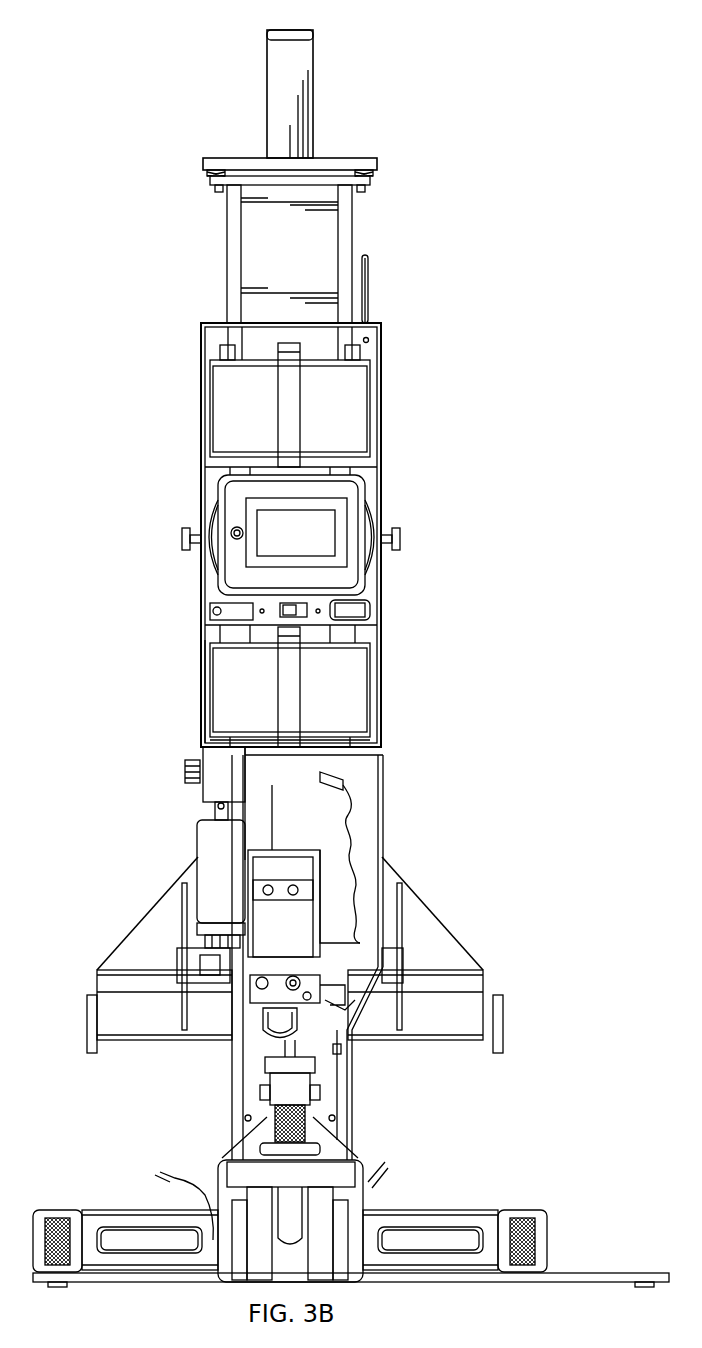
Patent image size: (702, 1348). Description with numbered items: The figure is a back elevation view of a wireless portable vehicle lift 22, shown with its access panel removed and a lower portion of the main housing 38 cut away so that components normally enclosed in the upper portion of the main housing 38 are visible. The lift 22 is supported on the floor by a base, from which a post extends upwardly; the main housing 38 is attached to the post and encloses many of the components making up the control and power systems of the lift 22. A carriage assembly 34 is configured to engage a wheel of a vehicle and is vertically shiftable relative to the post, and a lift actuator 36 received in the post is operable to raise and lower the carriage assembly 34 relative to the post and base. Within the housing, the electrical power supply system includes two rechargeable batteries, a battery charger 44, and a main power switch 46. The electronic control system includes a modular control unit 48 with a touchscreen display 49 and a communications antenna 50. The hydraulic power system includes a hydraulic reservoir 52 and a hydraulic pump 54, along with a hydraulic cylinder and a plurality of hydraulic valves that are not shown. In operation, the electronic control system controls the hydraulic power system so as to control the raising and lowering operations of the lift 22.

The vehicle lift 22 is at (210, 45).
The carriage assembly 34 is at (430, 907).
The lift actuator 36 is at (278, 97).
The main housing 38 is at (200, 690).
The battery charger 44 is at (212, 848).
The main power switch 46 is at (185, 775).
The modular control unit 48 is at (217, 490).
The touchscreen display 49 is at (307, 530).
The communications antenna 50 is at (370, 262).
The hydraulic reservoir 52 is at (332, 840).
The hydraulic pump 54 is at (263, 990).